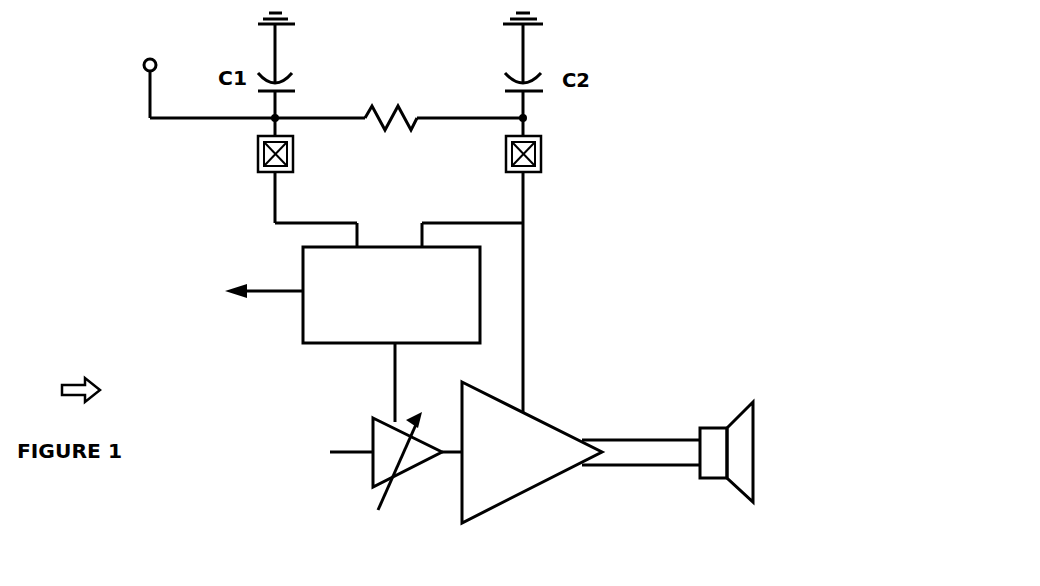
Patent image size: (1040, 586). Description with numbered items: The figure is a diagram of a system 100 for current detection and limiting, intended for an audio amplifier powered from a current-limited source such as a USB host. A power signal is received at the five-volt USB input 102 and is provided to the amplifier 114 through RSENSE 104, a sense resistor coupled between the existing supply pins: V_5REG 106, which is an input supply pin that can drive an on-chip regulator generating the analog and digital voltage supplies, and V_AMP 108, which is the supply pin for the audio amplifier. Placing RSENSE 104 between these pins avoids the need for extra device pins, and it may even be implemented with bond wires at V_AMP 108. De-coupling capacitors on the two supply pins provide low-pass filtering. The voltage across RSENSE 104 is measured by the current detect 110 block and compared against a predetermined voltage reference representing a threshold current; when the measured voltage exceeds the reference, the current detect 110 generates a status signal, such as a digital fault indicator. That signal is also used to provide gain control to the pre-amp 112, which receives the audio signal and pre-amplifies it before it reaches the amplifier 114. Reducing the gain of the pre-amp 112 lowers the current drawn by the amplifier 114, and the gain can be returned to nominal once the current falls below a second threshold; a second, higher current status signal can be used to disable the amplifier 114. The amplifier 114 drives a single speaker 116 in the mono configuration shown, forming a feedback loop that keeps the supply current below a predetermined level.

The system 100 is at (81, 378).
The 5V USB 102 is at (108, 58).
The RSENSE 104 is at (392, 89).
The V_5REG 106 is at (221, 164).
The V_AMP 108 is at (572, 164).
The current detect 110 is at (414, 332).
The pre-amp 112 is at (347, 481).
The amplifier 114 is at (532, 466).
The speaker 116 is at (753, 452).